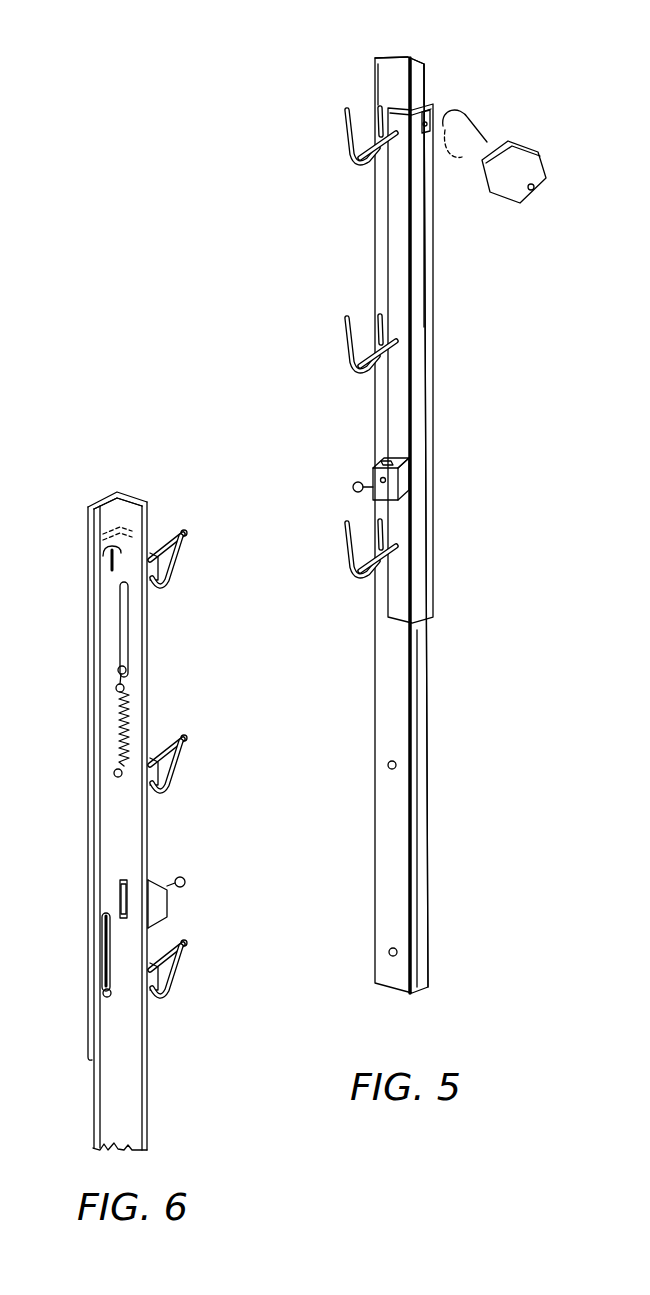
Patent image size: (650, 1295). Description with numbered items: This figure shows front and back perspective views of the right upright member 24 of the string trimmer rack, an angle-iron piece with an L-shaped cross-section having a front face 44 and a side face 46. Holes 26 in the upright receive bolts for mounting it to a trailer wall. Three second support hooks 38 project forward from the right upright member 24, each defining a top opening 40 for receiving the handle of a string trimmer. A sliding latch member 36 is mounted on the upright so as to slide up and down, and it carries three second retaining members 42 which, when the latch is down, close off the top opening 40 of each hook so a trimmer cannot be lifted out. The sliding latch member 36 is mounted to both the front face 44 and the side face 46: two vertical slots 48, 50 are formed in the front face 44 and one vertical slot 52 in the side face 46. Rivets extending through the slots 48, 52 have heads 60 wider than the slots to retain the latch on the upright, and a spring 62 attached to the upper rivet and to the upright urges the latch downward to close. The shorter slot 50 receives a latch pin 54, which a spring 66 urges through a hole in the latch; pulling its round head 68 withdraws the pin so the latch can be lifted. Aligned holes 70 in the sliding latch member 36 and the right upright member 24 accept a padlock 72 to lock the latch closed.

In FIG. 5, the right upright member 24 is at (395, 58).
In FIG. 6, the right upright member 24 is at (133, 495).
In FIG. 5, the holes 26 is at (387, 767).
In FIG. 5, the sliding latch member 36 is at (425, 252).
In FIG. 6, the sliding latch member 36 is at (92, 547).
In FIG. 5, the second support hooks 38 is at (344, 118).
In FIG. 6, the second support hooks 38 is at (178, 557).
In FIG. 5, the top opening 40 is at (360, 117).
In FIG. 5, the second retaining members 42 is at (365, 165).
In FIG. 6, the second retaining members 42 is at (187, 533).
In FIG. 5, the front face 44 is at (390, 682).
In FIG. 6, the front face 44 is at (130, 512).
In FIG. 5, the side face 46 is at (423, 698).
In FIG. 6, the side face 46 is at (107, 510).
In FIG. 6, the vertical slot 48 is at (127, 593).
In FIG. 6, the slot 50 is at (103, 888).
In FIG. 6, the vertical slot 52 is at (100, 960).
In FIG. 5, the latch pin 54 is at (370, 475).
In FIG. 6, the latch pin 54 is at (120, 910).
In FIG. 6, the heads 60 is at (118, 670).
In FIG. 6, the spring 62 is at (117, 723).
In FIG. 5, the spring 66 is at (387, 463).
In FIG. 5, the round head 68 is at (353, 487).
In FIG. 6, the round head 68 is at (183, 877).
In FIG. 5, the aligned holes 70 is at (433, 123).
In FIG. 6, the aligned holes 70 is at (117, 548).
In FIG. 5, the padlock 72 is at (527, 150).